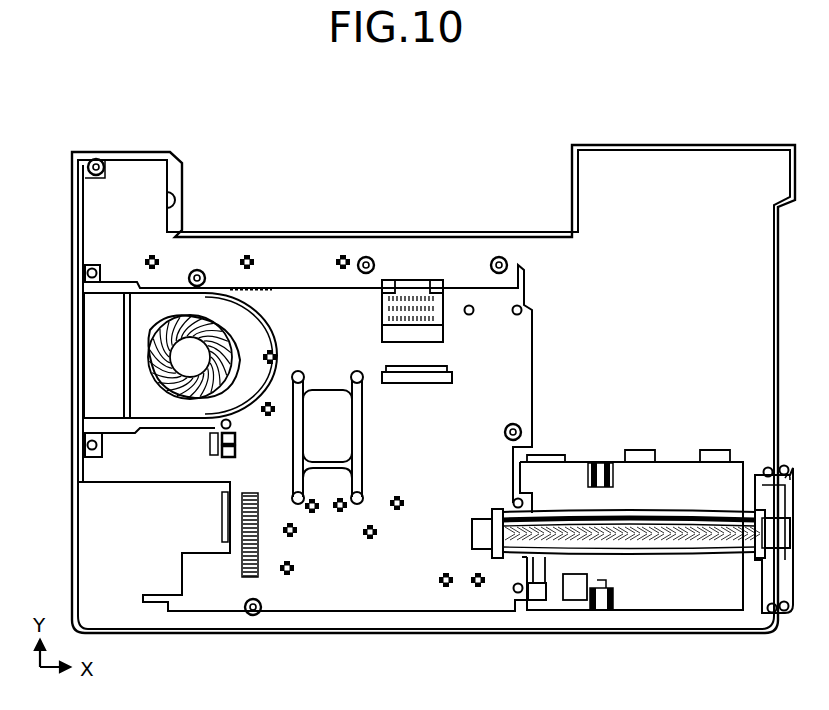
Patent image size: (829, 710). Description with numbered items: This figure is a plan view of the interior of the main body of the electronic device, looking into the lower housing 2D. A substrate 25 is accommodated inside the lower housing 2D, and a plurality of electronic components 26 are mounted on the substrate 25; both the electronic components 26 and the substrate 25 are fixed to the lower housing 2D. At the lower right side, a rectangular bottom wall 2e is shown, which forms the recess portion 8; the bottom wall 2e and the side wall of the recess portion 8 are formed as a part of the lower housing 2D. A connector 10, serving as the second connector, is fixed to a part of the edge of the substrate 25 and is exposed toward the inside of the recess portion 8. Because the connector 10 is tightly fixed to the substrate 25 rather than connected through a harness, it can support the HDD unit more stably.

The lower housing 2D is at (655, 138).
The bottom wall 2e is at (640, 600).
The substrate 25 is at (360, 622).
The electronic components 26 is at (140, 282).
The connector 10 is at (538, 600).
The recess portion 8 is at (718, 595).